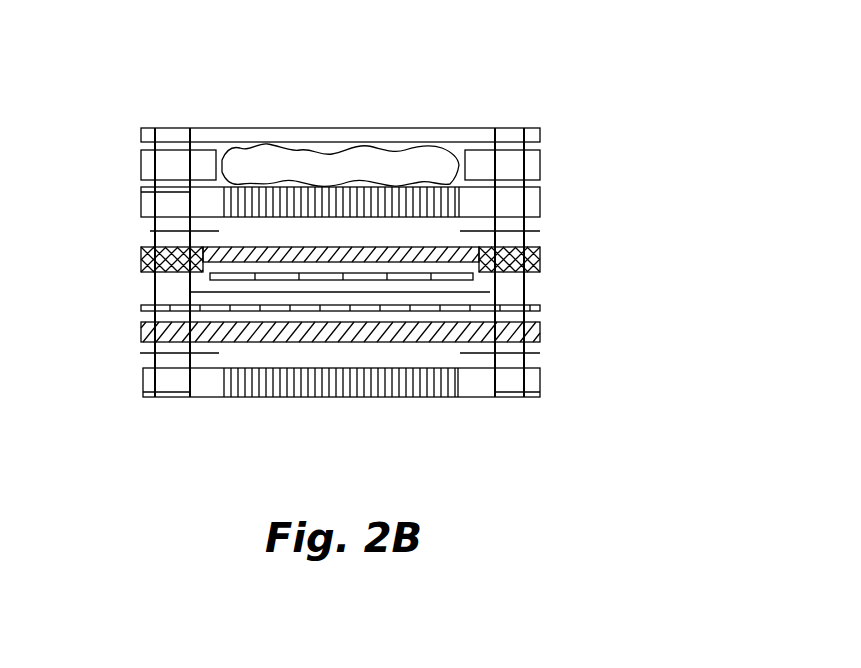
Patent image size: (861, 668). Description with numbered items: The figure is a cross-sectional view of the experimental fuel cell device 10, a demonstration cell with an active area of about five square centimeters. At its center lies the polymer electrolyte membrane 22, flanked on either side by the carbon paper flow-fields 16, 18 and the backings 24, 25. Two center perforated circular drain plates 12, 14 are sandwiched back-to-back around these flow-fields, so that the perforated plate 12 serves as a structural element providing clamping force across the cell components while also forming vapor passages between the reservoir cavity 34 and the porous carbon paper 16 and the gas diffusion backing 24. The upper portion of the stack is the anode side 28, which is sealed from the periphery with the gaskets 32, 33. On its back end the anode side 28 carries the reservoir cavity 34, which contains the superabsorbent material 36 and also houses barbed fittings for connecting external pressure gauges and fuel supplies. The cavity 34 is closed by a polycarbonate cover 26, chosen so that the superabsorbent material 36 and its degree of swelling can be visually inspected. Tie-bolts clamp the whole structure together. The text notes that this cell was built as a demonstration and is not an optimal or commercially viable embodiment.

The experimental fuel cell device 10 is at (566, 88).
The perforated drain plate 12 is at (432, 208).
The perforated drain plate 14 is at (413, 390).
The carbon paper flow-field 16 is at (470, 248).
The carbon paper flow-field 18 is at (543, 332).
The polymer electrolyte membrane 22 is at (490, 292).
The gas diffusion backing 24 is at (210, 275).
The backing 25 is at (150, 307).
The polycarbonate cover 26 is at (198, 137).
The anode side 28 is at (82, 112).
The gasket 32 is at (150, 231).
The gasket 33 is at (141, 258).
The reservoir cavity 34 is at (468, 148).
The superabsorbent material 36 is at (268, 172).